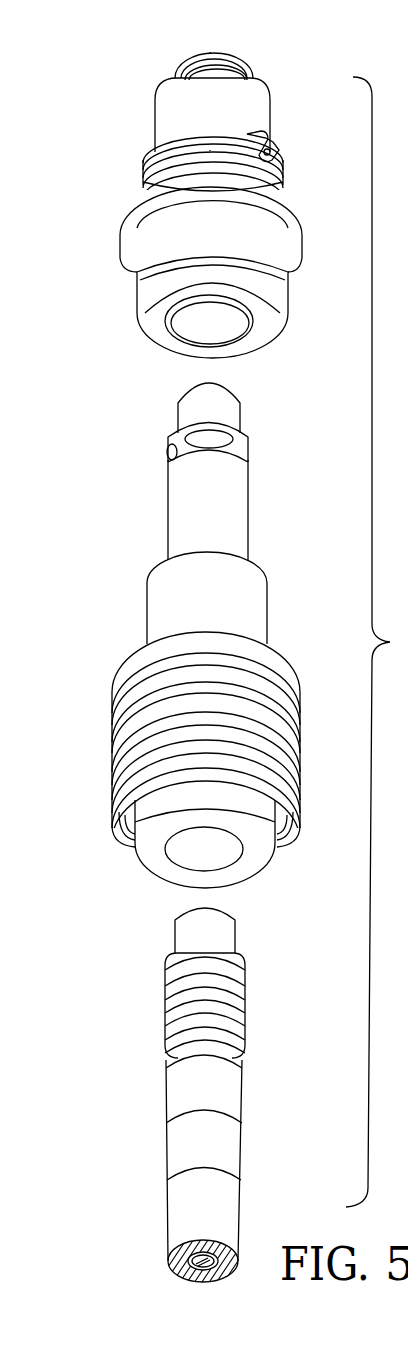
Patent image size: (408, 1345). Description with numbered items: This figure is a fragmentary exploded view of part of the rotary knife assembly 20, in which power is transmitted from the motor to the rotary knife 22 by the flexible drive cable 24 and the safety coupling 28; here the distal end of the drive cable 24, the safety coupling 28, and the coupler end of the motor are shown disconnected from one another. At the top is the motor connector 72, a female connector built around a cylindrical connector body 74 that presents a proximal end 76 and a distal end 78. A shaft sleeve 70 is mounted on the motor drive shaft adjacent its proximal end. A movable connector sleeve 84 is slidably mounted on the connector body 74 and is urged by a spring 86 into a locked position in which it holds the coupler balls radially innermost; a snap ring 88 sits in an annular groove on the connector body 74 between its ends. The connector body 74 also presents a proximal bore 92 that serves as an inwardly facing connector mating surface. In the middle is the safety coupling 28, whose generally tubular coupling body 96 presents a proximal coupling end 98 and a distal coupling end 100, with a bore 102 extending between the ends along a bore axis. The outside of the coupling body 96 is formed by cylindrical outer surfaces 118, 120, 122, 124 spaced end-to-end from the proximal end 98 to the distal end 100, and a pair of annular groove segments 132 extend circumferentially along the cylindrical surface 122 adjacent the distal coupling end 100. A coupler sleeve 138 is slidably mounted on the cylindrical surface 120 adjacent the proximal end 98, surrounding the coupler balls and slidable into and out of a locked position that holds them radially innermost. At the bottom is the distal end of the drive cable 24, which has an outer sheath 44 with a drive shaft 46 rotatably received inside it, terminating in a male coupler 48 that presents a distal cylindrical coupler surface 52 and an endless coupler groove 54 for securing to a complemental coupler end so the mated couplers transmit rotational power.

The rotary knife assembly 20 is at (148, 30).
The rotary knife 22 is at (377, 642).
The flexible drive cable 24 is at (178, 1138).
The safety coupling 28 is at (168, 548).
The outer sheath 44 is at (188, 1253).
The drive shaft 46 is at (187, 1267).
The male coupler 48 is at (170, 1002).
The distal cylindrical coupler surface 52 is at (180, 938).
The endless coupler groove 54 is at (178, 977).
The shaft sleeve 70 is at (172, 72).
The motor connector 72 is at (188, 127).
The cylindrical connector body 74 is at (187, 269).
The proximal end of connector body 76 is at (279, 366).
The distal end of connector body 78 is at (279, 77).
The movable connector sleeve 84 is at (190, 222).
The spring 86 is at (178, 172).
The snap ring 88 is at (262, 140).
The proximal bore 92 is at (183, 325).
The coupling body 96 is at (252, 606).
The proximal coupling end 98 is at (271, 903).
The distal coupling end 100 is at (148, 372).
The bore 102 is at (203, 847).
The cylindrical outer surface 118 is at (162, 803).
The cylindrical outer surface 120 is at (157, 596).
The cylindrical outer surface 122 is at (185, 505).
The cylindrical outer surface 124 is at (187, 410).
The annular groove segments 132 is at (170, 448).
The coupler sleeve 138 is at (159, 708).